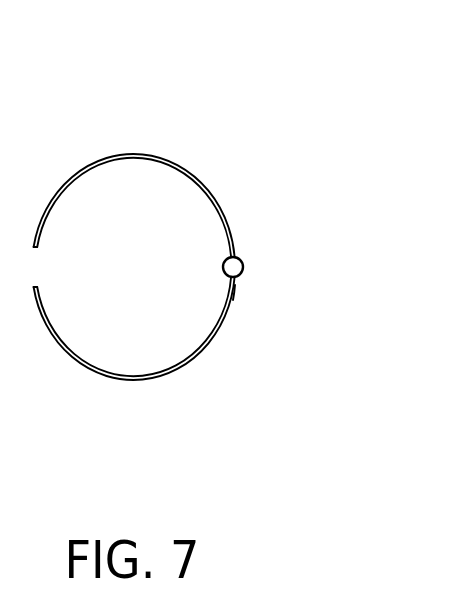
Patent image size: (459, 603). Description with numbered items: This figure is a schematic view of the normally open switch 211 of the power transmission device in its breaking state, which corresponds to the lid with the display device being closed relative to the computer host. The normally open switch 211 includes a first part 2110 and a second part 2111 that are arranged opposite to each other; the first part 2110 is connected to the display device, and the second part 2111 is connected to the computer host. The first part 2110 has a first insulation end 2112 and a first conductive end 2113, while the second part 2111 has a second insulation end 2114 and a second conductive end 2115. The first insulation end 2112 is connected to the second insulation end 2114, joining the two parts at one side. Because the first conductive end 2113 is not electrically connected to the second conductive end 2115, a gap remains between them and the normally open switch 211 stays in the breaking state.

The normally open switch 211 is at (100, 30).
The first part 2110 is at (57, 85).
The second part 2111 is at (314, 357).
The first insulation end 2112 is at (236, 242).
The first conductive end 2113 is at (33, 220).
The second insulation end 2114 is at (235, 292).
The second conductive end 2115 is at (37, 317).